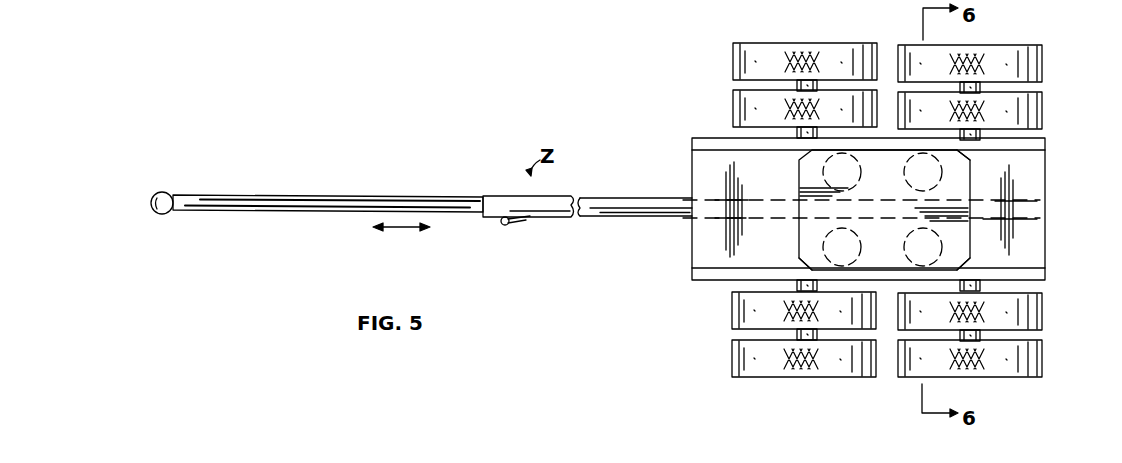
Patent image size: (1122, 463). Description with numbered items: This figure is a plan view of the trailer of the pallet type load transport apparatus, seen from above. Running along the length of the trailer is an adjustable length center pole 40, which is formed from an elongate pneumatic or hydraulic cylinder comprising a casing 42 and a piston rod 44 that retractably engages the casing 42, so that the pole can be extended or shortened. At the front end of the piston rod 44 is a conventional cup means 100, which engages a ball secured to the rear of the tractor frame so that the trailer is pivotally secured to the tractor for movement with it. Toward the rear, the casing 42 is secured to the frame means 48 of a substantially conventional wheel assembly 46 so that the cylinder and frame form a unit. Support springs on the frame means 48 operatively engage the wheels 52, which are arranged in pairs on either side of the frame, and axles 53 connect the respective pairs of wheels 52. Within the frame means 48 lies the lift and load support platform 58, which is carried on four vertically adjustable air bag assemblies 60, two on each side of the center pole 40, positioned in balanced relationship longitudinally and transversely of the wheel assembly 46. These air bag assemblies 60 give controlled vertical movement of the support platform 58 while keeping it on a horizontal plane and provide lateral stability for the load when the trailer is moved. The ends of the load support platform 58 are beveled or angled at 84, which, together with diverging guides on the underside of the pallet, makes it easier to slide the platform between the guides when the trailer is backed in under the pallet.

The cup means 100 is at (155, 196).
The piston rod 44 is at (328, 214).
The adjustable length center pole 40 is at (585, 225).
The casing 42 is at (616, 213).
The frame means 48 is at (689, 136).
The load support platform 58 is at (800, 168).
The air bag assemblies 60 is at (904, 167).
The beveled ends 84 is at (968, 154).
The axles 53 is at (812, 82).
The wheels 52 is at (879, 204).
The wheel assembly 46 is at (728, 50).